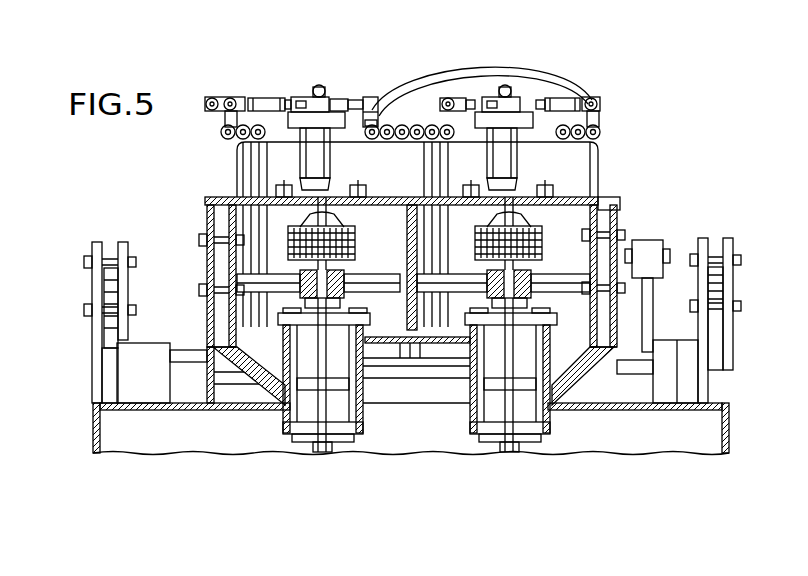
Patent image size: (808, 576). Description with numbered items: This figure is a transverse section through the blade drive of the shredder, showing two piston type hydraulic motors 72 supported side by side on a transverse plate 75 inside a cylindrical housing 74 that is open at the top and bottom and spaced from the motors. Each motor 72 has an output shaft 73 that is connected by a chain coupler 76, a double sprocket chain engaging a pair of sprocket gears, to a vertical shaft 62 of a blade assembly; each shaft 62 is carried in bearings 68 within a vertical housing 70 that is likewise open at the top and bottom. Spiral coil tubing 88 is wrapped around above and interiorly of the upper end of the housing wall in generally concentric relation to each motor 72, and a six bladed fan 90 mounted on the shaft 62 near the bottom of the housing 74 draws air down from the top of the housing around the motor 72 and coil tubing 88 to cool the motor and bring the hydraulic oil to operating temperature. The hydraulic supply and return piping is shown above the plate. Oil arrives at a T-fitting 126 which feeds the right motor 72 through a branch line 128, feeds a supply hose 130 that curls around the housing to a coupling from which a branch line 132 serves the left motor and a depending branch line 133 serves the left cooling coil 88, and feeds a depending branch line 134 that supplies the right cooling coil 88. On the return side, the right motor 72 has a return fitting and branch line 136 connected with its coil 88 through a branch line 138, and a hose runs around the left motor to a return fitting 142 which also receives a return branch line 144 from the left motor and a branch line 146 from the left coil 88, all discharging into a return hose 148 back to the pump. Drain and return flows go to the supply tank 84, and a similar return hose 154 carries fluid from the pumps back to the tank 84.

The vertical shaft 62 is at (508, 388).
The bearings 68 is at (300, 440).
The vertical housing 70 is at (378, 390).
The hydraulic motor 72 is at (308, 150).
The output shaft 73 is at (486, 178).
The housing 74 is at (207, 222).
The transverse plate 75 is at (618, 200).
The chain coupler 76 is at (542, 234).
The supply tank 84 is at (394, 0).
The spiral coil tubing 88 is at (600, 133).
The fan 90 is at (370, 290).
The T-fitting 126 is at (598, 96).
The branch line 128 is at (564, 98).
The supply hose 130 is at (542, 72).
The branch line 132 is at (356, 98).
The depending branch line 133 is at (378, 100).
The depending branch line 134 is at (599, 118).
The return fitting and branch line 136 is at (451, 98).
The branch line 138 is at (440, 125).
The return fitting 142 is at (231, 98).
The return branch line 144 is at (268, 98).
The branch line 146 is at (224, 124).
The return hose 148 is at (211, 97).
The return hose 154 is at (566, 0).